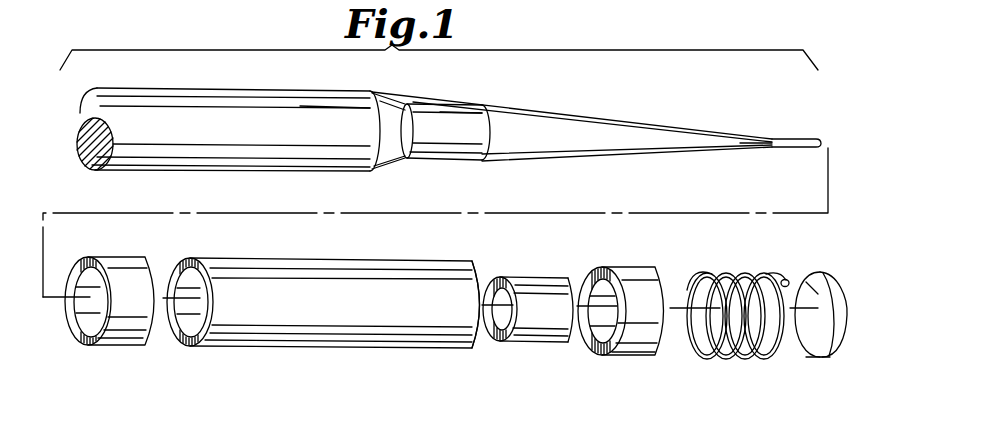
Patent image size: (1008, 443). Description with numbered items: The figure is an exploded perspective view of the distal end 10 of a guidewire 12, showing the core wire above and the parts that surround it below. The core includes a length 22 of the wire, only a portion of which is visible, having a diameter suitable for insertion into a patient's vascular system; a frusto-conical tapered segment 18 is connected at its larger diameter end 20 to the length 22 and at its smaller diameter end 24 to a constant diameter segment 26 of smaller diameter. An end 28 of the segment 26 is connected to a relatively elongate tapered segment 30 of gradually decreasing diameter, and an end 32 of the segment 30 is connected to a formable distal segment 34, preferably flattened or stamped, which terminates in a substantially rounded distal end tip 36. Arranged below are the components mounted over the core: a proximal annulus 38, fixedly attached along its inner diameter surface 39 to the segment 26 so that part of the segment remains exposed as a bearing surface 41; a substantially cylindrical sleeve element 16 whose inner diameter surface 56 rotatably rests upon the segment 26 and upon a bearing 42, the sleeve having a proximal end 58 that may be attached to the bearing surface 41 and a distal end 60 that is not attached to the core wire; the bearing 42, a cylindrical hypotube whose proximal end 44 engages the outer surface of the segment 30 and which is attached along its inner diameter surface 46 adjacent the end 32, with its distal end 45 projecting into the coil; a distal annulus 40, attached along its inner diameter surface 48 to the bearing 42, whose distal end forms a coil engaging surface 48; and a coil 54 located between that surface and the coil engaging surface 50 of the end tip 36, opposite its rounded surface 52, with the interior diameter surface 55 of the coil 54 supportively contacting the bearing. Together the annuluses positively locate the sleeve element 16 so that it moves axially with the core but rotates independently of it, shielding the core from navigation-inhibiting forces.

The distal end 10 is at (833, 139).
The guidewire 12 is at (175, 98).
The sleeve element 16 is at (323, 318).
The tapered segment 18 is at (401, 130).
The larger diameter end 20 is at (316, 103).
The length 22 is at (232, 141).
The smaller diameter end 24 is at (402, 166).
The constant diameter segment 26 is at (448, 141).
The end 28 is at (489, 158).
The tapered segment 30 is at (545, 146).
The end 32 is at (753, 139).
The formable distal segment 34 is at (803, 139).
The distal end tip 36 is at (812, 362).
The proximal annulus 38 is at (127, 342).
The inner diameter surface 39 is at (86, 342).
The distal annulus 40 is at (646, 289).
The bearing surface 41 is at (462, 113).
The bearing 42 is at (553, 320).
The proximal end 44 is at (492, 340).
The distal end 45 is at (572, 341).
The inner diameter surface 46 is at (500, 278).
The coil engaging surface 48 is at (650, 353).
The coil engaging surface 50 is at (818, 274).
The rounded surface 52 is at (848, 302).
The coil 54 is at (735, 358).
The interior diameter surface 55 is at (735, 250).
The inner diameter surface 56 is at (199, 262).
The proximal end 58 is at (189, 346).
The distal end 60 is at (476, 277).